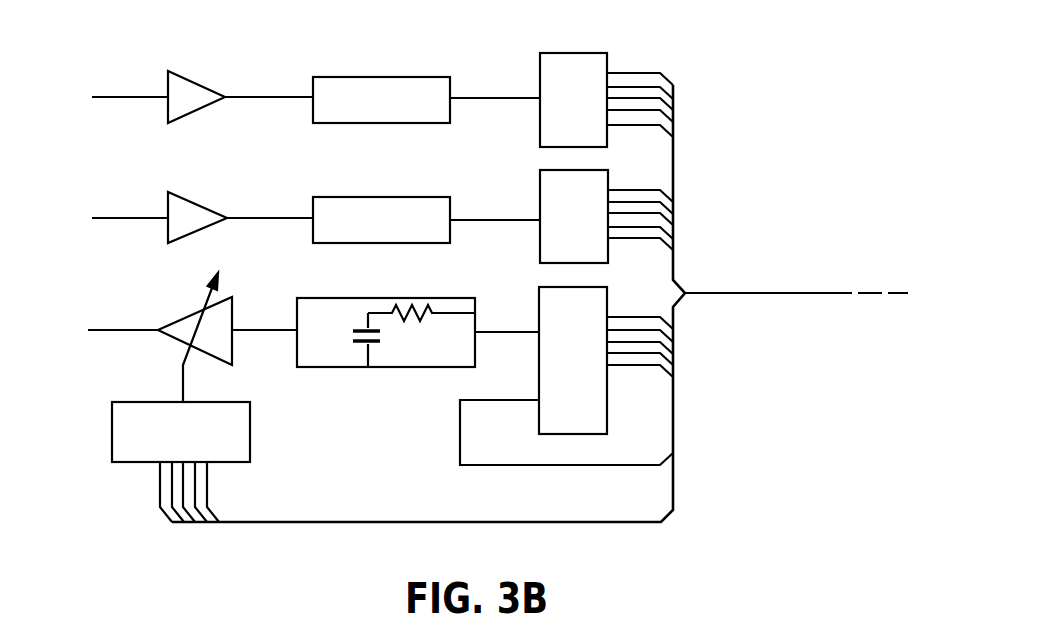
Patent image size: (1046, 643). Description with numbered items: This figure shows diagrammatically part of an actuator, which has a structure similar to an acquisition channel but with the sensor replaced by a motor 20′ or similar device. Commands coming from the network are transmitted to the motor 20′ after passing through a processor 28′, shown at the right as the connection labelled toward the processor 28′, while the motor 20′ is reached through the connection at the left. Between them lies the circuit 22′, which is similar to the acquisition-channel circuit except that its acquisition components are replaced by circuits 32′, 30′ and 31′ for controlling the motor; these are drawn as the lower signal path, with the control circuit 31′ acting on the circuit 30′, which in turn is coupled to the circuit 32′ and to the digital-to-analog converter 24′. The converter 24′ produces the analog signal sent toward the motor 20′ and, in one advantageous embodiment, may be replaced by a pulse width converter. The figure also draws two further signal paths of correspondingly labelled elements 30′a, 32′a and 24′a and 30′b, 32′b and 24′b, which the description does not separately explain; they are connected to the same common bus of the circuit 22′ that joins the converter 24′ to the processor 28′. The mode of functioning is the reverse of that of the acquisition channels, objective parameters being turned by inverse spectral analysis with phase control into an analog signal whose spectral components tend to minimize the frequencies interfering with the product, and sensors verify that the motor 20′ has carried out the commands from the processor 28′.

The amplifier 30′a is at (168, 97).
The filter 32′a is at (355, 77).
The analog-to-digital converter 24′a is at (568, 53).
The amplifier 30′b is at (197, 200).
The filter 32′b is at (325, 197).
The analog-to-digital converter 24′b is at (540, 197).
The motor control circuit 30′ is at (187, 317).
The motor control circuit 32′ is at (400, 298).
The motor control circuit 31′ is at (250, 423).
The digital-to-analog converter 24′ is at (539, 425).
The circuit 22′ is at (697, 170).
The motor 20′ is at (122, 332).
The processor 28′ is at (796, 275).